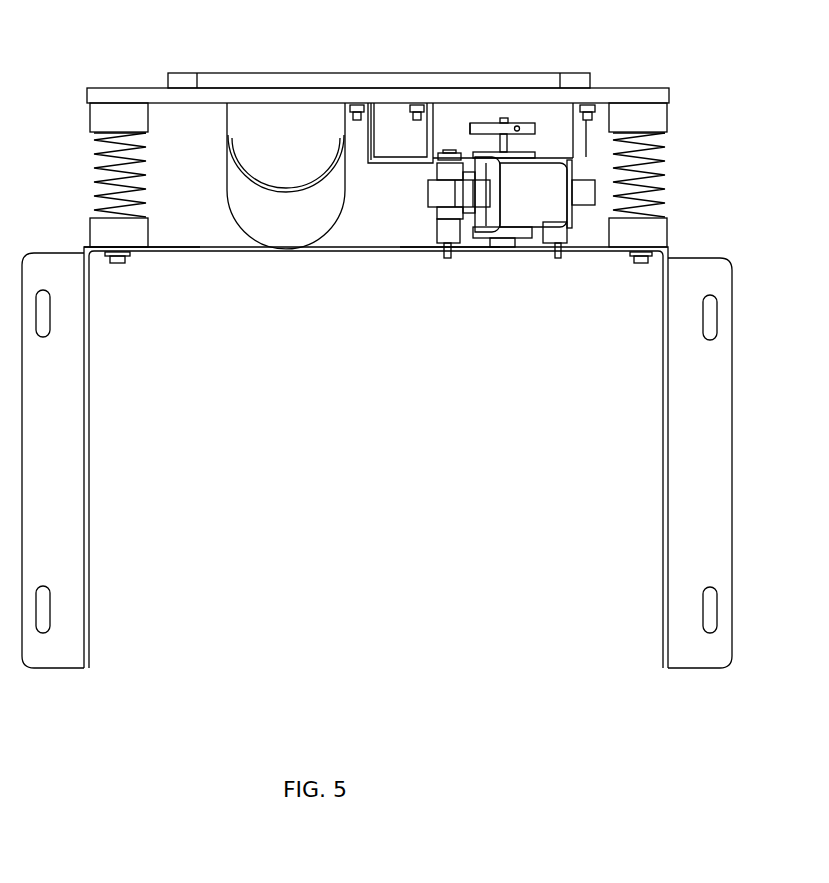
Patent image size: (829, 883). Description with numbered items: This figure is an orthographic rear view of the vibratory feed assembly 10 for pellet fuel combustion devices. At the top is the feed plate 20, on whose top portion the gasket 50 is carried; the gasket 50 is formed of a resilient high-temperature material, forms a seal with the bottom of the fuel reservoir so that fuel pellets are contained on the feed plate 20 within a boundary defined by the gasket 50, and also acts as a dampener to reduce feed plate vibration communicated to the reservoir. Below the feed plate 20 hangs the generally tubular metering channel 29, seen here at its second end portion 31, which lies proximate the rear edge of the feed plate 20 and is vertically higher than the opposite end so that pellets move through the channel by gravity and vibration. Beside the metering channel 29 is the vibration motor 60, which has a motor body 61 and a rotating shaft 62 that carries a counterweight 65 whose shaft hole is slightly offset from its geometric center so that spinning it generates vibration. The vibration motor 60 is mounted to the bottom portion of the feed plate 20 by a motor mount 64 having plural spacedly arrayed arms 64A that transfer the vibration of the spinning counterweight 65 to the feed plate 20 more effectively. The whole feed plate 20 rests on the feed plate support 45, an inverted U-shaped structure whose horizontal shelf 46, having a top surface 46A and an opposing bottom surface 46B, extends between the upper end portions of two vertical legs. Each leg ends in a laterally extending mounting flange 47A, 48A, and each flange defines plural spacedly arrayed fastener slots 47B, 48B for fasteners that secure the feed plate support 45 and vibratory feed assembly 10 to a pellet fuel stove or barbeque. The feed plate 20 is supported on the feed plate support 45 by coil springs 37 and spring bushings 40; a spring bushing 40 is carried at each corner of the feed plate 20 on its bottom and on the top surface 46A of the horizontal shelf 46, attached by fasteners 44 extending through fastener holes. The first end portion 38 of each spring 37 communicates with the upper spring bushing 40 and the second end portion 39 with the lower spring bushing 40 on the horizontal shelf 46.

The vibratory feed assembly 10 is at (509, 302).
The feed plate 20 is at (138, 78).
The metering channel 29 is at (255, 218).
The second end portion 31 is at (262, 136).
The spring 37 is at (100, 178).
The first end portion 38 is at (95, 143).
The second end portion 39 is at (92, 210).
The spring bushing 40 is at (103, 115).
The fastener 44 is at (118, 264).
The feed plate support 45 is at (116, 400).
The horizontal shelf 46 is at (358, 250).
The top surface 46A is at (163, 248).
The bottom surface 46B is at (423, 250).
The mounting flange 47A is at (65, 450).
The fastener slot 47B is at (43, 320).
The mounting flange 48A is at (680, 465).
The fastener slot 48B is at (710, 317).
The gasket 50 is at (543, 78).
The vibration motor 60 is at (424, 212).
The motor body 61 is at (527, 203).
The rotating shaft 62 is at (505, 145).
The motor mount 64 is at (433, 162).
The arm 64A is at (378, 110).
The counterweight 65 is at (476, 128).